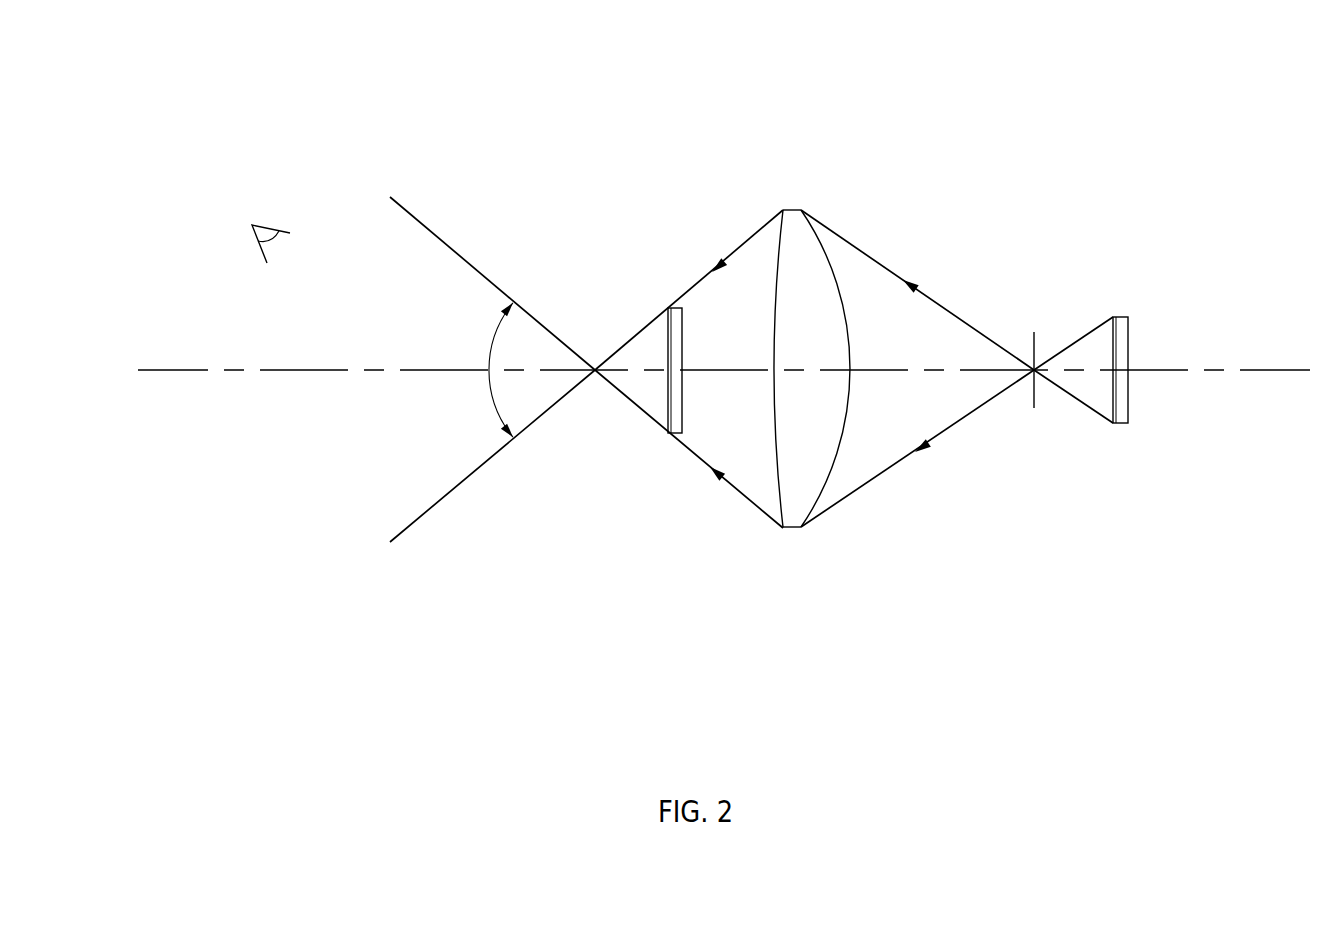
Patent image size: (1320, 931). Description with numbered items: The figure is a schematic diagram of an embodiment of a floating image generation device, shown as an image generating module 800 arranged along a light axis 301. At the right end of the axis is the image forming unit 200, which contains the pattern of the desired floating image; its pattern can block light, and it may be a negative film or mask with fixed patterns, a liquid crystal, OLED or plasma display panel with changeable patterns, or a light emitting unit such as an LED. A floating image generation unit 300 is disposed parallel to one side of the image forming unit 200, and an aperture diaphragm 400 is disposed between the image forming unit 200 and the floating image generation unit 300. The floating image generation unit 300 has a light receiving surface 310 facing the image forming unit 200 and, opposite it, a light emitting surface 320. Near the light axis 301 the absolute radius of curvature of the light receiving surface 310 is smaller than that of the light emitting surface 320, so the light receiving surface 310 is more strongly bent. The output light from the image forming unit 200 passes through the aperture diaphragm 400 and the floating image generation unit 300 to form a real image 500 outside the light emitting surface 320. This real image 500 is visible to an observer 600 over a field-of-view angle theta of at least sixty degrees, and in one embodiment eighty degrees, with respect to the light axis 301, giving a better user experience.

The image generating module 800 is at (295, 76).
The observer eye 600 is at (261, 227).
The light axis 301 is at (701, 372).
The real image 500 is at (669, 433).
The floating image generation unit 300 is at (822, 369).
The light emitting surface 320 is at (778, 243).
The light receiving surface 310 is at (820, 247).
The aperture diaphragm 400 is at (1035, 413).
The image forming unit 200 is at (1122, 430).